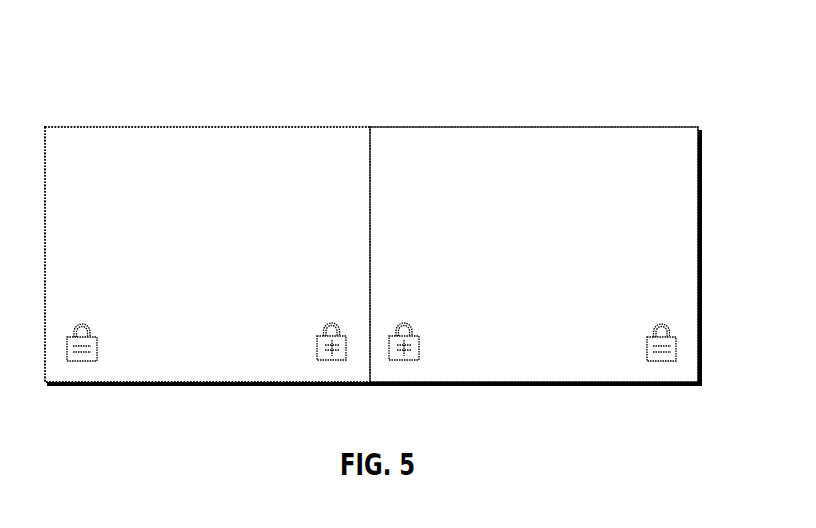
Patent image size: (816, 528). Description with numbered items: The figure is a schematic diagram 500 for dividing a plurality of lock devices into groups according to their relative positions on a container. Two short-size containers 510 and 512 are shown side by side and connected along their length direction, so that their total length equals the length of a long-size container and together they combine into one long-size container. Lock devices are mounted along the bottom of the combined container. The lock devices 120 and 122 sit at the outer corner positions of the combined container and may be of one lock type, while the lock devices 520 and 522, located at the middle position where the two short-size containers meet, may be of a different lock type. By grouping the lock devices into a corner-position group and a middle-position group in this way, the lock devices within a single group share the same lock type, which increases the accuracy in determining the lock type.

The schematic diagram 500 is at (216, 50).
The short-size container 510 is at (276, 128).
The short-size container 512 is at (593, 128).
The lock device 120 is at (94, 337).
The lock device 520 is at (317, 336).
The lock device 522 is at (415, 335).
The lock device 122 is at (672, 336).